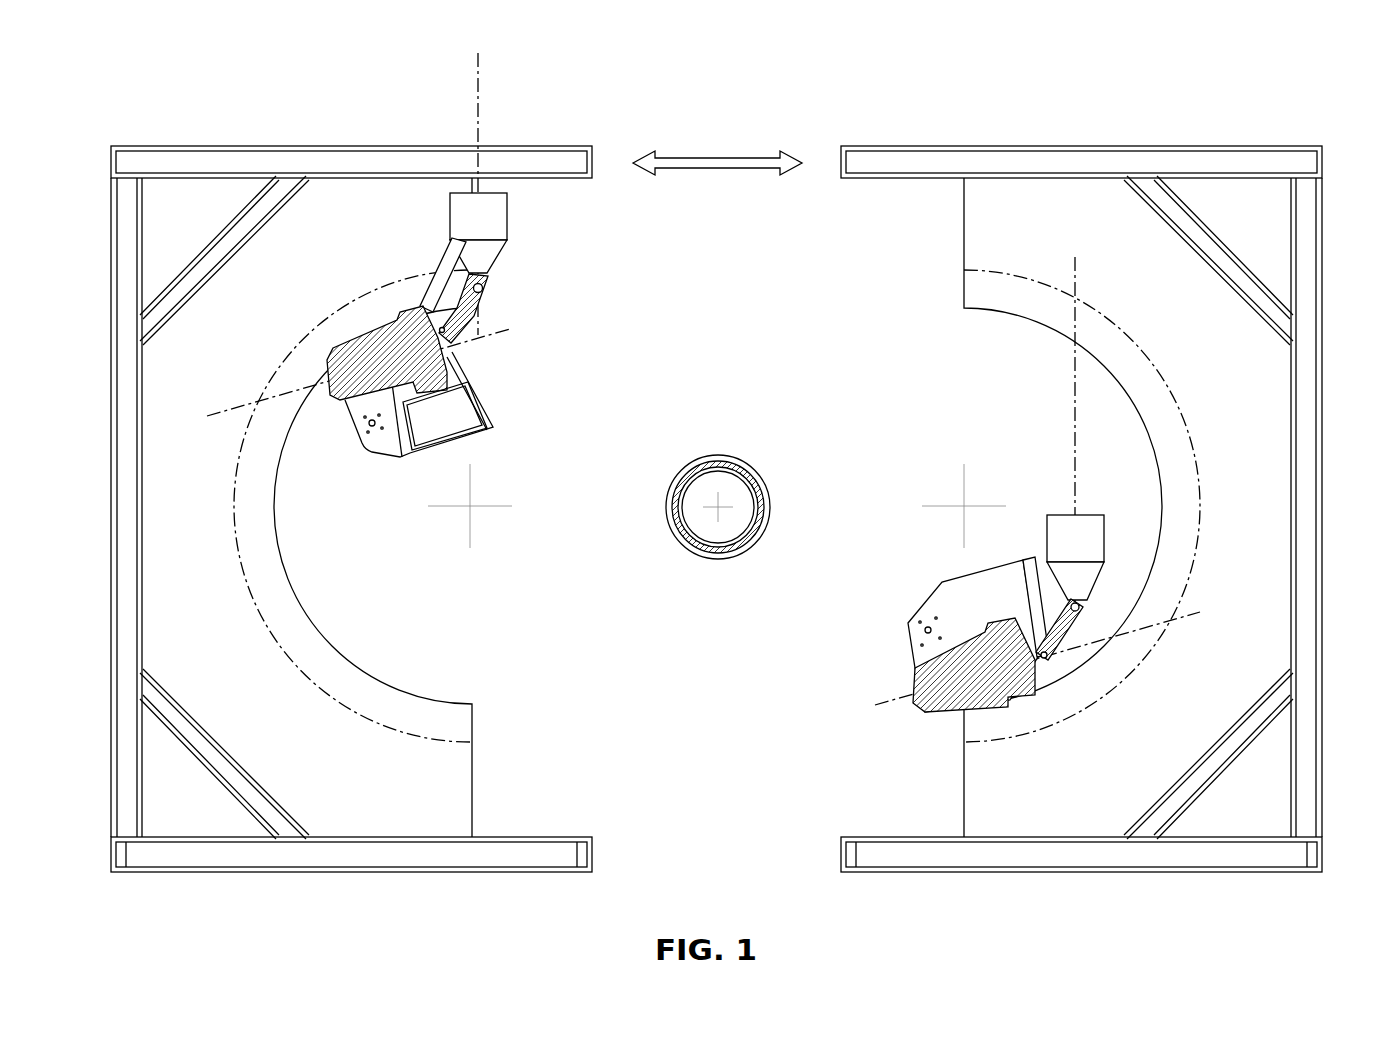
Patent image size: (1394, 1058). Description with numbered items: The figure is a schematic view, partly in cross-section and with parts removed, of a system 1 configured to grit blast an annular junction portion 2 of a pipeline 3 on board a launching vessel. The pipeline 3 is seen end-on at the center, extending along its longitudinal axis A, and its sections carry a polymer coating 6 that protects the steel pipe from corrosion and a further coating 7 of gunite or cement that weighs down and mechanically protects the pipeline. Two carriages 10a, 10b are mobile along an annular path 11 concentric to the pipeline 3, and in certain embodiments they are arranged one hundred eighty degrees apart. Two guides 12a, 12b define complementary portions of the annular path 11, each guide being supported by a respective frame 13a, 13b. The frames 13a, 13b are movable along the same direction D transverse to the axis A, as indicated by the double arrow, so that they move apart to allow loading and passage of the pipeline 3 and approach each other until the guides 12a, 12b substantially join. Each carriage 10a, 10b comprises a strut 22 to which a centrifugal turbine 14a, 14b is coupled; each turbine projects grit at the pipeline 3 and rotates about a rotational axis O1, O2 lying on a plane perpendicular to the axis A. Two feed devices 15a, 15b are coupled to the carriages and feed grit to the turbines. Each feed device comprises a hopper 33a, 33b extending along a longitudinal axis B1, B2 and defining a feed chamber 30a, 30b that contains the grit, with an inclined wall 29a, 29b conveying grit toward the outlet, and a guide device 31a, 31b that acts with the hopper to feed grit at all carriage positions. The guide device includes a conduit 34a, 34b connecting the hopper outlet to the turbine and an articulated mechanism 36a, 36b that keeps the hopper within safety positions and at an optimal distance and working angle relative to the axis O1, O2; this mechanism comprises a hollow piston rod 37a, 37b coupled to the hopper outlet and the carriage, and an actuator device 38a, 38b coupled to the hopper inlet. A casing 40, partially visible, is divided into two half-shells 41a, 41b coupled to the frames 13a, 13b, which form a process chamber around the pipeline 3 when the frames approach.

The system 1 is at (942, 120).
The annular junction portion 2 is at (734, 449).
The pipeline 3 is at (746, 563).
The polymer coating 6 is at (683, 532).
The further coating 7 is at (700, 559).
The carriage 10a is at (909, 717).
The carriage 10b is at (488, 359).
The annular path 11 is at (389, 738).
The guide 12a is at (894, 295).
The guide 12b is at (491, 747).
The frame 13a is at (1292, 136).
The frame 13b is at (157, 142).
The centrifugal turbine 14a is at (932, 708).
The centrifugal turbine 14b is at (356, 358).
The feed device 15a is at (1113, 549).
The feed device 15b is at (517, 192).
The strut 22 is at (497, 420).
The inclined wall 29a is at (1098, 580).
The inclined wall 29b is at (500, 255).
The feed chamber 30a is at (1055, 509).
The feed chamber 30b is at (494, 213).
The guide device 31a is at (1123, 562).
The guide device 31b is at (575, 343).
The hopper 33a is at (1083, 514).
The hopper 33b is at (472, 192).
The conduit 34a is at (1068, 628).
The conduit 34b is at (447, 330).
The articulated mechanism 36a is at (1098, 602).
The articulated mechanism 36b is at (498, 285).
The piston rod 37a is at (1061, 667).
The piston rod 37b is at (468, 318).
The actuator device 38a is at (1026, 558).
The actuator device 38b is at (433, 292).
The casing 40 is at (1210, 132).
The half-shell 41a is at (1110, 146).
The half-shell 41b is at (198, 146).
The longitudinal axis A is at (718, 507).
The longitudinal axis B1 is at (1075, 285).
The longitudinal axis B2 is at (478, 75).
The direction D is at (712, 158).
The rotational axis O1 is at (888, 700).
The rotational axis O2 is at (265, 397).